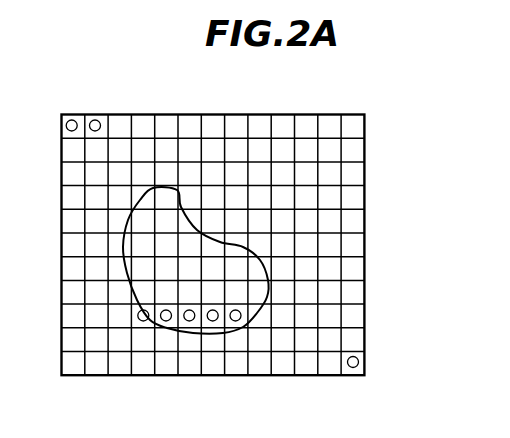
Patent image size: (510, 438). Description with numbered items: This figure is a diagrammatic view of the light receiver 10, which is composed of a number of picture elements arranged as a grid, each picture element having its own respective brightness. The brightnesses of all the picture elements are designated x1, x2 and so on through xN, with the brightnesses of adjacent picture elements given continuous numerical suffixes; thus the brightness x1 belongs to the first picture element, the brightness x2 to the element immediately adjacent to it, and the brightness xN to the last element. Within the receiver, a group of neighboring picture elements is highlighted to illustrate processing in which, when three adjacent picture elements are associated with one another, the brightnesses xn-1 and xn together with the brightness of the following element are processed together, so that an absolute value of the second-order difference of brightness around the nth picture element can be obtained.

The array of picture elements (image grid) 10 is at (142, 120).
The brightness of first picture element x1 is at (76, 118).
The brightness of second picture element x2 is at (102, 118).
The brightness of (n-1)th picture element xn-1 is at (166, 321).
The brightness of nth picture element xn is at (190, 321).
The brightness of Nth picture element xN is at (353, 368).